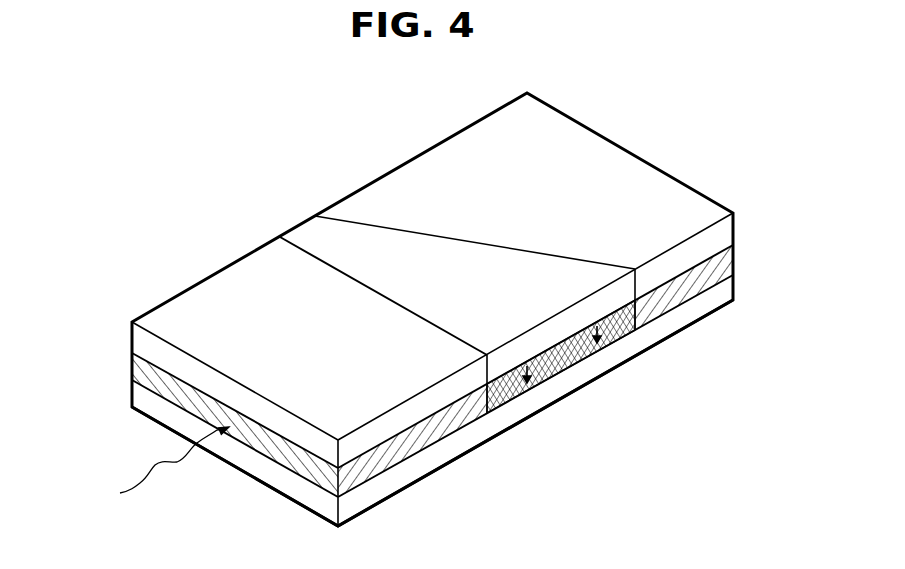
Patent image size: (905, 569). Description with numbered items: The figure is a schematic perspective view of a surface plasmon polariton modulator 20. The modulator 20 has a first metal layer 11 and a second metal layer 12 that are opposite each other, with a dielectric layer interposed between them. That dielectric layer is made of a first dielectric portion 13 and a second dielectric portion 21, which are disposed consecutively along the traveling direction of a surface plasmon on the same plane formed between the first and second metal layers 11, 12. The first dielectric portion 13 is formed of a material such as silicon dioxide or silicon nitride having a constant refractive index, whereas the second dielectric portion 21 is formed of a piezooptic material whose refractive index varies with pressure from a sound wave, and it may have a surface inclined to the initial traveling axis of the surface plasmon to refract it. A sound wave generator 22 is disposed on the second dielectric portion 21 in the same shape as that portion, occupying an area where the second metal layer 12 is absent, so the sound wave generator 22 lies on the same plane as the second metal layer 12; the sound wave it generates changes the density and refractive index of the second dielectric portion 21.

The first metal layer 11 is at (733, 289).
The second metal layer 12 is at (733, 230).
The first dielectric portion 13 is at (733, 259).
The surface plasmon polariton modulator 20 is at (465, 520).
The second dielectric portion 21 is at (562, 372).
The sound wave generator 22 is at (402, 232).